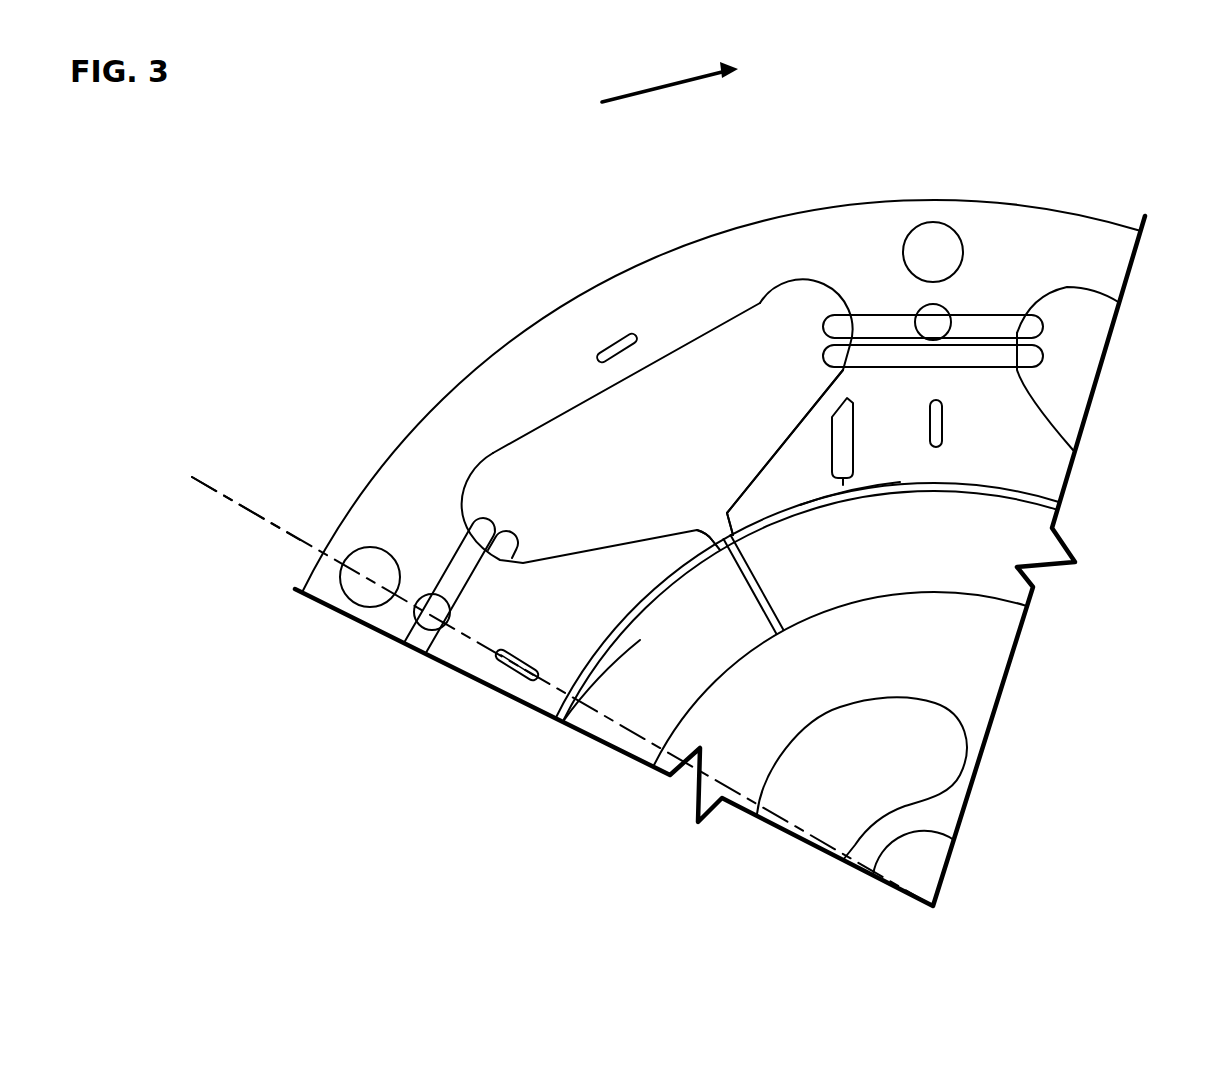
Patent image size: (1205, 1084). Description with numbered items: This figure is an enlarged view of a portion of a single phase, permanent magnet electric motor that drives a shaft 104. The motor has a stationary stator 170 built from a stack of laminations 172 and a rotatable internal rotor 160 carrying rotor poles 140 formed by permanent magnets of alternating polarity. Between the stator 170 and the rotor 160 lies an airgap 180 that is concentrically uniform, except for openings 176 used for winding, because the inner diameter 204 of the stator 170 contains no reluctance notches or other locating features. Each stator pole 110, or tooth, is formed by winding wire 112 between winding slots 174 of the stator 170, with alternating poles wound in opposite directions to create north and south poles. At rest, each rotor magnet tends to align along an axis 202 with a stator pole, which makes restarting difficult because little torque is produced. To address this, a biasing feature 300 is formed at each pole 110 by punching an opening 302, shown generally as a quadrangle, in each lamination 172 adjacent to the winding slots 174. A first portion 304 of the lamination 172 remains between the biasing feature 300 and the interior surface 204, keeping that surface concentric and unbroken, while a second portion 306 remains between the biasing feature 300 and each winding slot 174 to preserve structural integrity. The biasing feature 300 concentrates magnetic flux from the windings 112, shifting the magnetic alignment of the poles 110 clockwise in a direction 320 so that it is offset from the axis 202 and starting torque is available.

The shaft 104 is at (917, 857).
The pole 110 is at (982, 464).
The wire 112 is at (447, 568).
The rotor pole 140 is at (817, 597).
The rotor 160 is at (975, 653).
The stator 170 is at (510, 324).
The lamination 172 is at (495, 378).
The winding slot 174 is at (515, 470).
The opening 176 is at (712, 530).
The airgap 180 is at (600, 650).
The axis 202 is at (247, 508).
The inner diameter 204 is at (1020, 490).
The biasing feature 300 is at (872, 430).
The opening 302 is at (843, 460).
The first portion 304 is at (843, 485).
The second portion 306 is at (837, 398).
The direction 320 is at (660, 80).